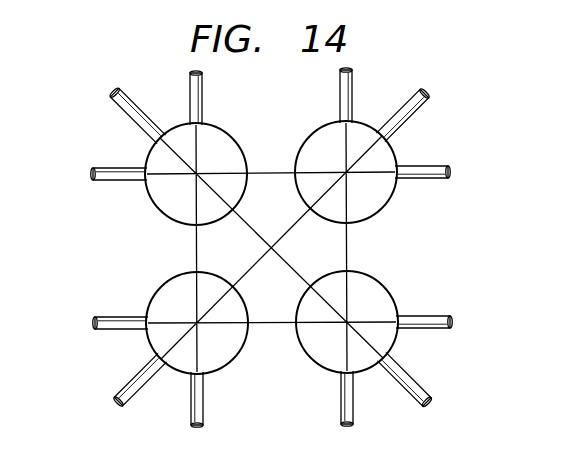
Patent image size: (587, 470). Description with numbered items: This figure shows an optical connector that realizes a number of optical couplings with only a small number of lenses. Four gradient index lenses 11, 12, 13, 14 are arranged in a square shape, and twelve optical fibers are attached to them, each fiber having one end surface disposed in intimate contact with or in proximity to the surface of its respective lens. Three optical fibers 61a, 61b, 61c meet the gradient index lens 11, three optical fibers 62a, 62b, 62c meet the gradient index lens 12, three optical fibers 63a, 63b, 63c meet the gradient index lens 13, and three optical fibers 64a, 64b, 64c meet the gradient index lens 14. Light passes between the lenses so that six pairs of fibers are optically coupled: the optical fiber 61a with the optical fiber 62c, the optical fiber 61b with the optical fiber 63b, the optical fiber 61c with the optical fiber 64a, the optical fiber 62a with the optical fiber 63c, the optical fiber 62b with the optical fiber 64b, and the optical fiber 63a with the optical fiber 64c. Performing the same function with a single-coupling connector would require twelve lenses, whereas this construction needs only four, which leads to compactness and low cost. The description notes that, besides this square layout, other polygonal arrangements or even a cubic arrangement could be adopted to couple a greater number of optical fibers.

The gradient index lens 11 is at (377, 203).
The gradient index lens 12 is at (237, 187).
The gradient index lens 13 is at (238, 305).
The gradient index lens 14 is at (308, 348).
The optical fiber 62a is at (203, 90).
The optical fiber 62b is at (125, 110).
The optical fiber 62c is at (123, 182).
The optical fiber 61c is at (352, 88).
The optical fiber 61b is at (415, 113).
The optical fiber 61a is at (420, 177).
The optical fiber 63a is at (130, 317).
The optical fiber 63b is at (138, 373).
The optical fiber 63c is at (208, 395).
The optical fiber 64c is at (413, 312).
The optical fiber 64b is at (408, 365).
The optical fiber 64a is at (353, 392).